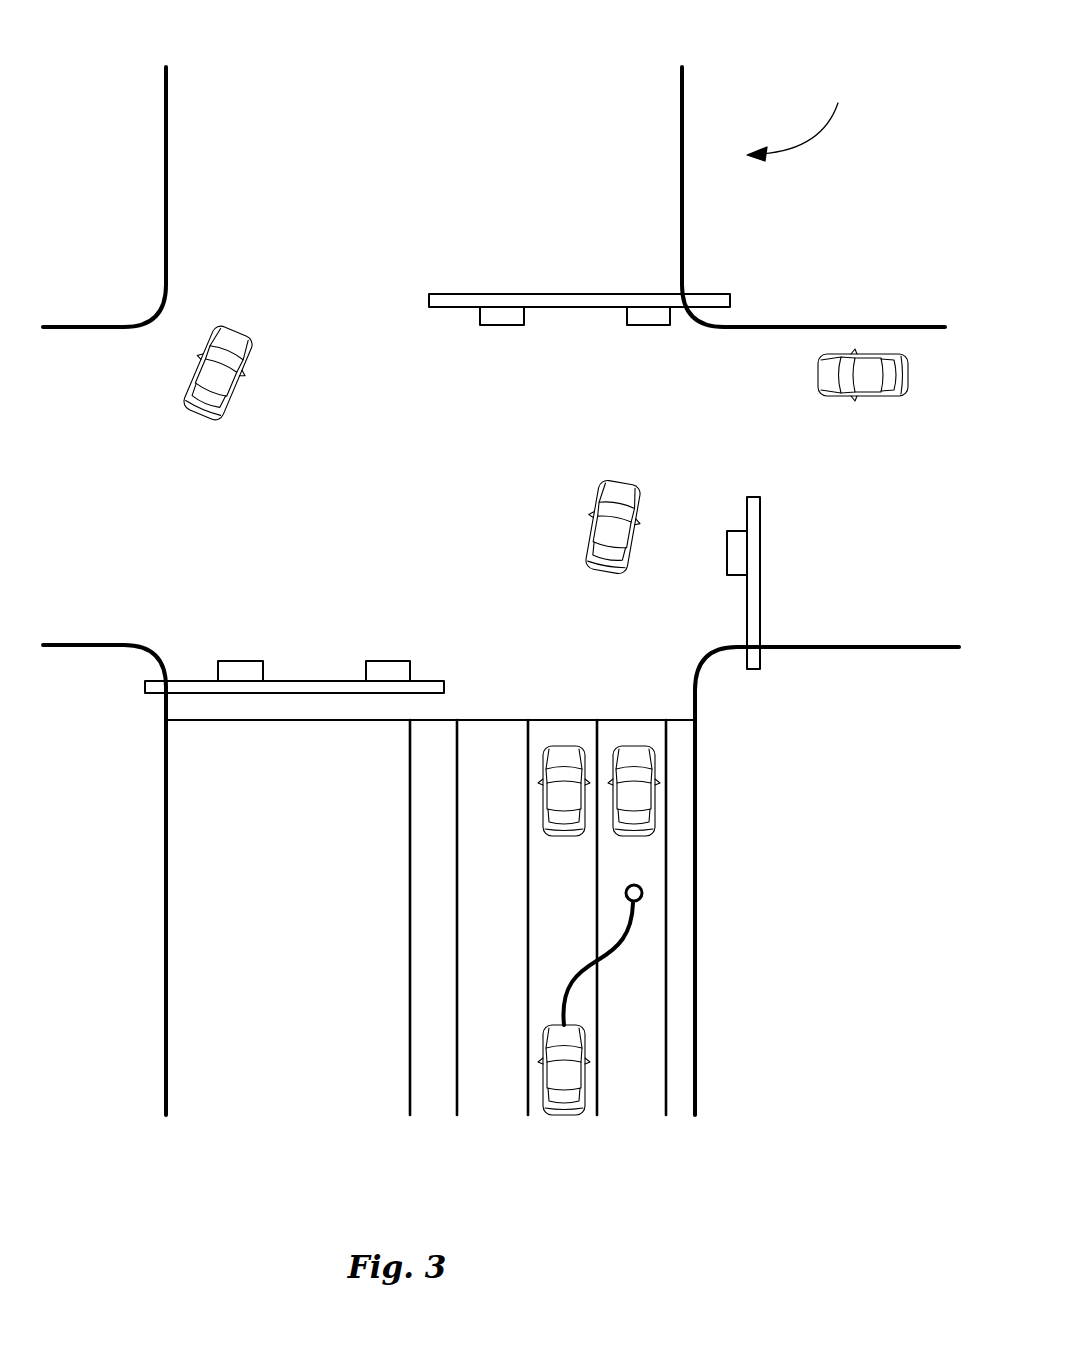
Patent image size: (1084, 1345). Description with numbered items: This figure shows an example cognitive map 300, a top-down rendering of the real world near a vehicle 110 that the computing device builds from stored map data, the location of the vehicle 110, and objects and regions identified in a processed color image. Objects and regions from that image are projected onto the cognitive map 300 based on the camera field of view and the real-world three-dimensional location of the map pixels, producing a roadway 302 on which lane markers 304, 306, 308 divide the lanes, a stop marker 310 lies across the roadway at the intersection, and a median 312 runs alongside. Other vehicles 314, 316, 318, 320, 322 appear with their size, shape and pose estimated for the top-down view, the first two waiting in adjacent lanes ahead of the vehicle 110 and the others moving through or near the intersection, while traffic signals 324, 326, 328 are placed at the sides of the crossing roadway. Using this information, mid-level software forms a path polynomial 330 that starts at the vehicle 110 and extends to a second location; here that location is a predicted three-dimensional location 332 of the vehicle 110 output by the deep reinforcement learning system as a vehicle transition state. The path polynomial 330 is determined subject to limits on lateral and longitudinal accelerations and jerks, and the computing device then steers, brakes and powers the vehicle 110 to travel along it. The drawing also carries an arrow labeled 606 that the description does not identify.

The cognitive map 300 is at (407, 26).
The roadway 302 is at (445, 585).
The lane marker 304 is at (666, 1100).
The lane marker 306 is at (598, 1100).
The lane marker 308 is at (528, 1115).
The stop marker 310 is at (634, 720).
The median 312 is at (457, 1115).
The other vehicle 314 is at (561, 838).
The other vehicle 316 is at (654, 797).
The other vehicle 318 is at (862, 397).
The other vehicle 320 is at (630, 484).
The other vehicle 322 is at (237, 402).
The traffic signal 324 is at (752, 497).
The traffic signal 326 is at (580, 307).
The traffic signal 328 is at (320, 680).
The path polynomial 330 is at (612, 955).
The predicted 3D location 332 is at (642, 897).
The vehicle 110 is at (564, 1117).
The direction arrow 606 is at (802, 118).